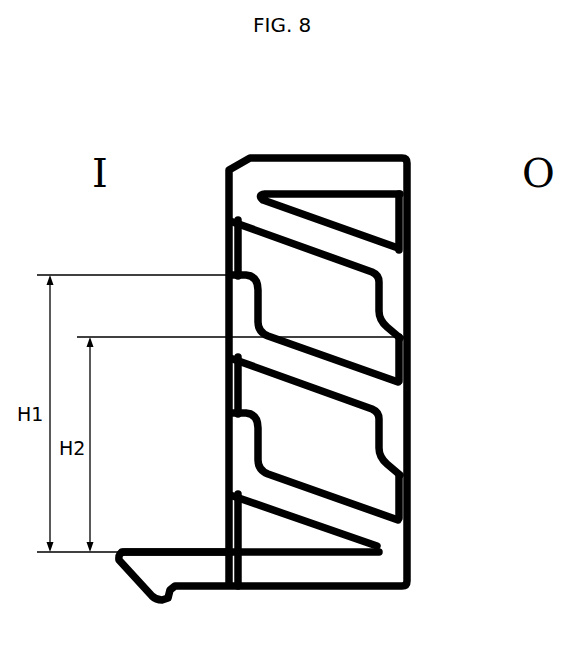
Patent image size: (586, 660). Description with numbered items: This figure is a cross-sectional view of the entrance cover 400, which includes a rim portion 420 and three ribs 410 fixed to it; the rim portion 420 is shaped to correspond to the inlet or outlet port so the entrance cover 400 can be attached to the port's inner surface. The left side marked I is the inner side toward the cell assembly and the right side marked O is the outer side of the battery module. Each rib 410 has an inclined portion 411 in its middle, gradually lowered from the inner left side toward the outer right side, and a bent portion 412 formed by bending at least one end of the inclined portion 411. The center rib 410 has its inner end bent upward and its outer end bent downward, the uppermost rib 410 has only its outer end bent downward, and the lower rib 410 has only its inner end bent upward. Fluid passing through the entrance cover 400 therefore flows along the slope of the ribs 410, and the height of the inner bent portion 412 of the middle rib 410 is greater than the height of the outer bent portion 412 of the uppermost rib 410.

The entrance cover 400 is at (222, 138).
The rib 410 is at (481, 214).
The inclined portion 411 is at (342, 237).
The bent portion 412 is at (391, 288).
The rim portion 420 is at (344, 170).